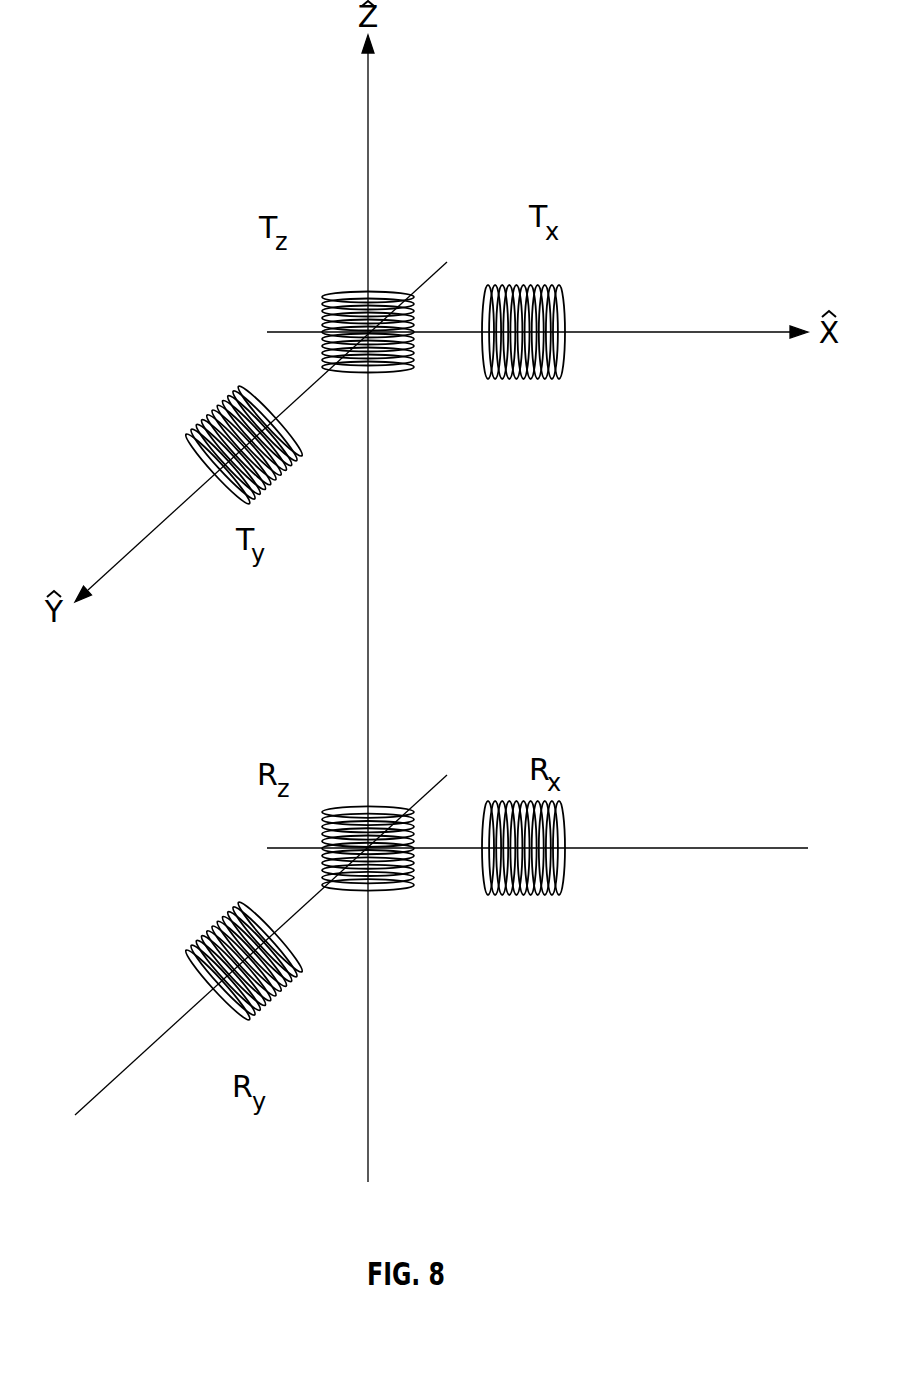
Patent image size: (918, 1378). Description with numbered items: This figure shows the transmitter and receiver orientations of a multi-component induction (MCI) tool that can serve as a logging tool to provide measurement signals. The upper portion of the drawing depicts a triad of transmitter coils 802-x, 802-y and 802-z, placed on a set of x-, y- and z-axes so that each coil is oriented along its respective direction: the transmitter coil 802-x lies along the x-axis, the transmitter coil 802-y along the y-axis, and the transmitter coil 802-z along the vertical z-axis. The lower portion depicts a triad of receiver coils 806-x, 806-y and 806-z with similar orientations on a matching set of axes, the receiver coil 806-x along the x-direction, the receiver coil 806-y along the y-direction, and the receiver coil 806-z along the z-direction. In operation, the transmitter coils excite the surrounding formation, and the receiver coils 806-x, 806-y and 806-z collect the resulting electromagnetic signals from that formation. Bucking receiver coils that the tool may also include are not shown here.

The transmitter coil 802-x is at (565, 292).
The transmitter coil 802-y is at (205, 423).
The transmitter coil 802-z is at (322, 311).
The receiver coil 806-x is at (565, 818).
The receiver coil 806-y is at (204, 935).
The receiver coil 806-z is at (322, 835).